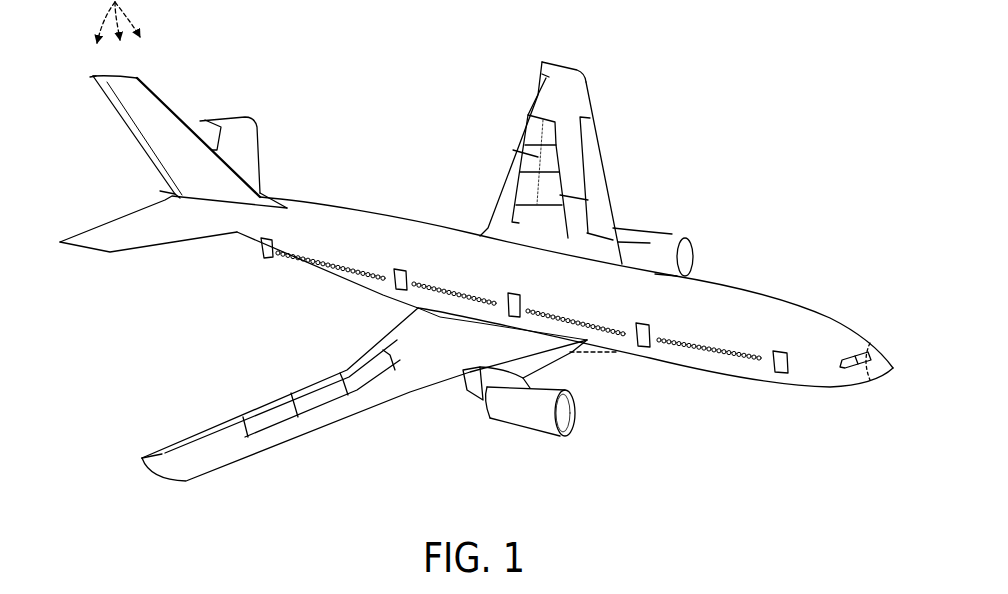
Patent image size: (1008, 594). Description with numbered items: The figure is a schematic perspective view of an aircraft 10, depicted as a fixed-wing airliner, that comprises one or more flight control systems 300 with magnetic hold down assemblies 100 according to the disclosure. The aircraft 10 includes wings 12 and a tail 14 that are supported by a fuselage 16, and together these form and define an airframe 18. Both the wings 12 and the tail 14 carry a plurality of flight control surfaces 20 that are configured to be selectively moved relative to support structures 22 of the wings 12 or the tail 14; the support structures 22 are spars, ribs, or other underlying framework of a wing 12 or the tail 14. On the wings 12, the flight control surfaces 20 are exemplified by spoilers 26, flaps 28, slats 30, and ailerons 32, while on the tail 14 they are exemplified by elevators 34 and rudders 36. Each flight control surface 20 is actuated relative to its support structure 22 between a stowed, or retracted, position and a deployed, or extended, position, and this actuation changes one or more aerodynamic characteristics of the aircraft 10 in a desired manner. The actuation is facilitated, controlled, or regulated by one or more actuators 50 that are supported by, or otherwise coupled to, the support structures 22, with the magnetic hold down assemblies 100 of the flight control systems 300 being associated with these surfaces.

The aircraft 10 is at (803, 100).
The wings 12 is at (590, 98).
The tail 14 is at (174, 77).
The fuselage 16 is at (738, 287).
The airframe 18 is at (753, 197).
The flight control surfaces 20 is at (110, 135).
The support structures 22 is at (562, 243).
The spoilers 26 is at (557, 195).
The flaps 28 is at (515, 232).
The slats 30 is at (560, 133).
The ailerons 32 is at (545, 79).
The elevators 34 is at (203, 125).
The rudders 36 is at (110, 103).
The actuators 50 is at (417, 200).
The magnetic hold down assemblies 100 is at (550, 130).
The flight control systems 300 is at (343, 128).